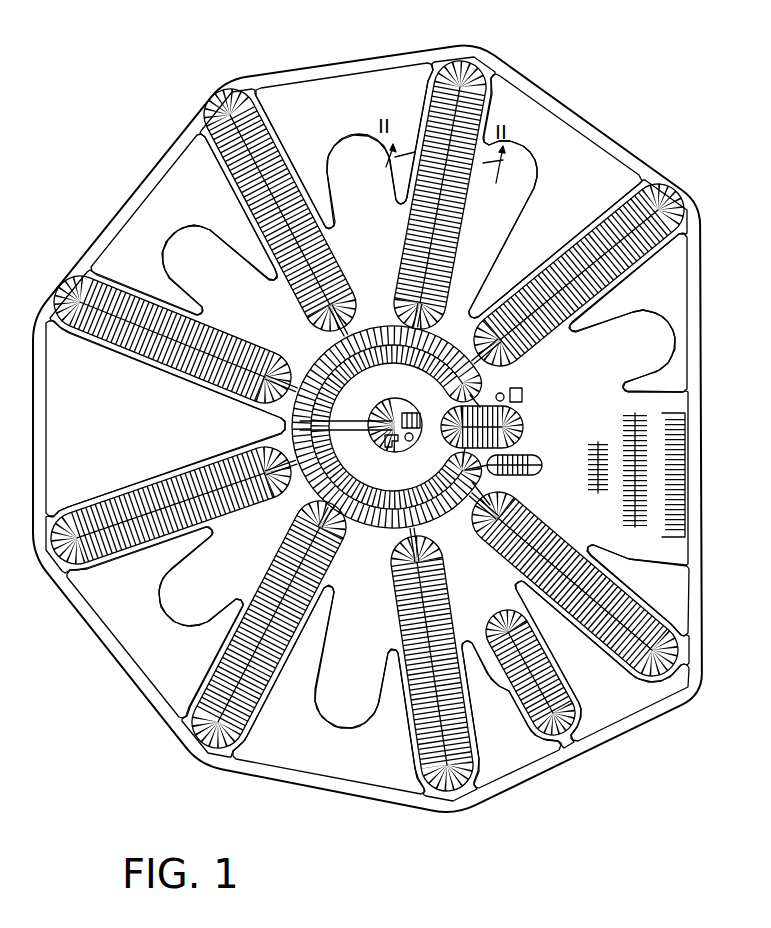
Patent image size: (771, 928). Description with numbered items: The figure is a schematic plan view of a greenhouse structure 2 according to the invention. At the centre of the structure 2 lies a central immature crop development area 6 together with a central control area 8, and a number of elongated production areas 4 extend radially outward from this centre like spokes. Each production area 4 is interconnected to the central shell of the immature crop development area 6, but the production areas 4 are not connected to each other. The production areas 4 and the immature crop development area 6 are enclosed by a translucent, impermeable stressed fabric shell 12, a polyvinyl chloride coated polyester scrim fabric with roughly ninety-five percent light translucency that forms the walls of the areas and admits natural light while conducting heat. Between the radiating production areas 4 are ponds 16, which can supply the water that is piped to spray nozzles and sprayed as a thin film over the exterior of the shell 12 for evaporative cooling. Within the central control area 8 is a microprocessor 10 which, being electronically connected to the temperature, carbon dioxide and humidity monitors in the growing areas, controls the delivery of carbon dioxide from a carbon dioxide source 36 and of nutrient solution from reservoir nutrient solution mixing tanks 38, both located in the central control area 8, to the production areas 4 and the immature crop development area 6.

The structure 2 is at (232, 72).
The production areas 4 is at (122, 302).
The immature crop development area 6 is at (300, 431).
The central control area 8 is at (392, 423).
The microprocessor 10 is at (421, 416).
The stressed fabric shell 12 is at (108, 553).
The ponds 16 is at (560, 212).
The carbon dioxide source 36 is at (523, 440).
The nutrient solution mixing tanks 38 is at (390, 448).